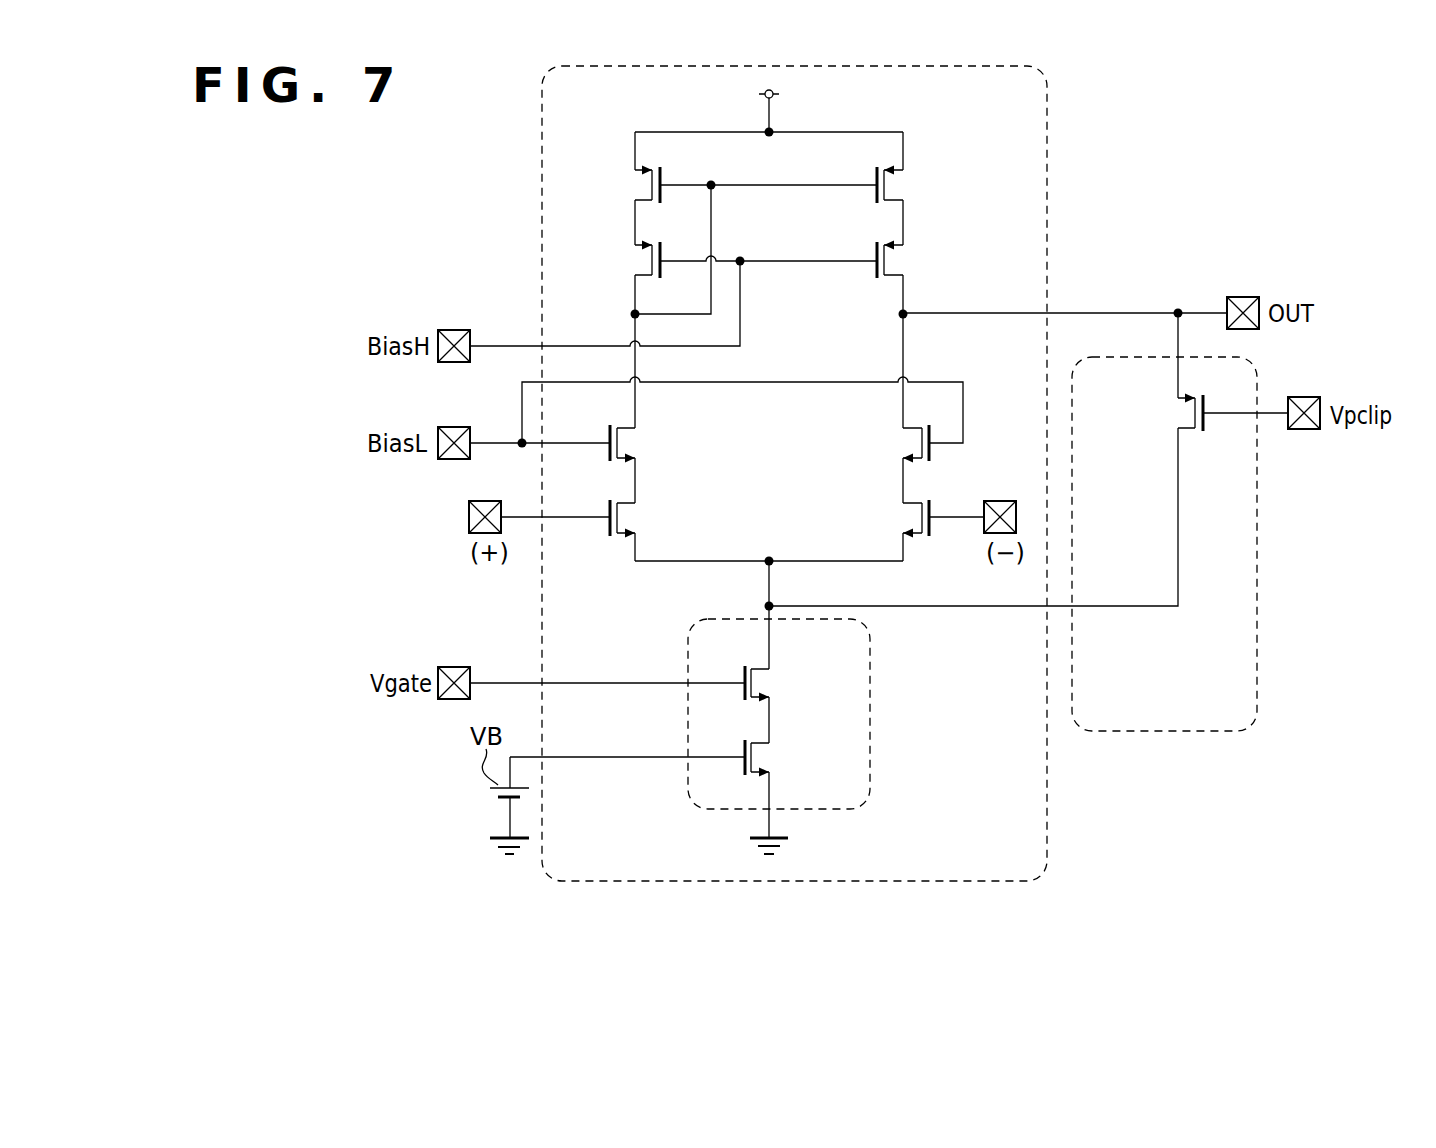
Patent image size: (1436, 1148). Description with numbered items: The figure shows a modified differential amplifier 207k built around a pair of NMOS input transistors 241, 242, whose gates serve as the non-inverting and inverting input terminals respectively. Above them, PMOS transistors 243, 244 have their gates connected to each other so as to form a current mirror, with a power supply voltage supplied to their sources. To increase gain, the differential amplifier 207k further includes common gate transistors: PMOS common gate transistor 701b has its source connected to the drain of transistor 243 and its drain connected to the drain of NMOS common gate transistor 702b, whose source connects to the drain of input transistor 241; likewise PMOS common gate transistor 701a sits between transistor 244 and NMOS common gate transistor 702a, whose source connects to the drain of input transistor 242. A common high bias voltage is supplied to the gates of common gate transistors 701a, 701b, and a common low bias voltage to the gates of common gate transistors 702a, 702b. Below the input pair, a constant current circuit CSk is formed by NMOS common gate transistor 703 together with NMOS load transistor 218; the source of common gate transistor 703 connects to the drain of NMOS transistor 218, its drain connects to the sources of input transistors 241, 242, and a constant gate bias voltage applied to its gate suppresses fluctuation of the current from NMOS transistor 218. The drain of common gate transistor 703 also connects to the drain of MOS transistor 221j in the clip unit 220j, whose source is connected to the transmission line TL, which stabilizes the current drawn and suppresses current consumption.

The transistor 243 is at (637, 183).
The transistor 244 is at (898, 183).
The common gate transistor 701b is at (637, 259).
The common gate transistor 701a is at (898, 259).
The common gate transistor 702b is at (637, 444).
The common gate transistor 702a is at (901, 444).
The input transistor 241 is at (637, 519).
The input transistor 242 is at (901, 519).
The common gate transistor 703 is at (771, 685).
The NMOS transistor 218 is at (771, 760).
The MOS transistor 221j is at (1176, 414).
The clip unit 220j is at (1178, 733).
The differential amplifier 207k is at (781, 883).
The constant current circuit CSk is at (871, 697).
The transmission line TL is at (1114, 305).